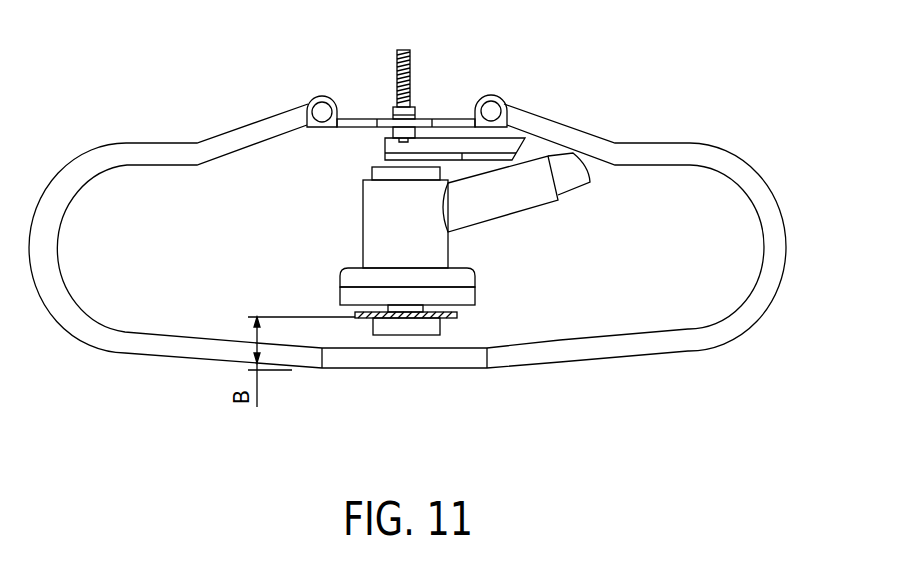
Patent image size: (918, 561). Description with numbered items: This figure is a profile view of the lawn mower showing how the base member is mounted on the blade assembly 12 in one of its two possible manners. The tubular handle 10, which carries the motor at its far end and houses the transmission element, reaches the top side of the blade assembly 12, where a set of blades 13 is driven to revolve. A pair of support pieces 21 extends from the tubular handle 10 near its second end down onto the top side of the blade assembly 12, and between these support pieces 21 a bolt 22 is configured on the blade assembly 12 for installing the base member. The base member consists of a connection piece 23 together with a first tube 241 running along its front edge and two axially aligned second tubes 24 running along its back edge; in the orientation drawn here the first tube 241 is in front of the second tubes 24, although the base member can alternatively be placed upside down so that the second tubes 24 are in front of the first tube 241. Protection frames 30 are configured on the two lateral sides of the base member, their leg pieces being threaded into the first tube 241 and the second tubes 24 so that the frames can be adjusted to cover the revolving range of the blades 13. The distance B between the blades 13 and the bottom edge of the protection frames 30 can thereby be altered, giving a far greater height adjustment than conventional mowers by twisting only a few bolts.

The tubular handle 10 is at (572, 182).
The blade assembly 12 is at (375, 250).
The blades 13 is at (457, 317).
The support pieces 21 is at (493, 147).
The bolt 22 is at (408, 62).
The connection piece 23 is at (348, 127).
The second tubes 24 is at (498, 97).
The first tube 241 is at (310, 98).
The protection frames 30 is at (162, 150).